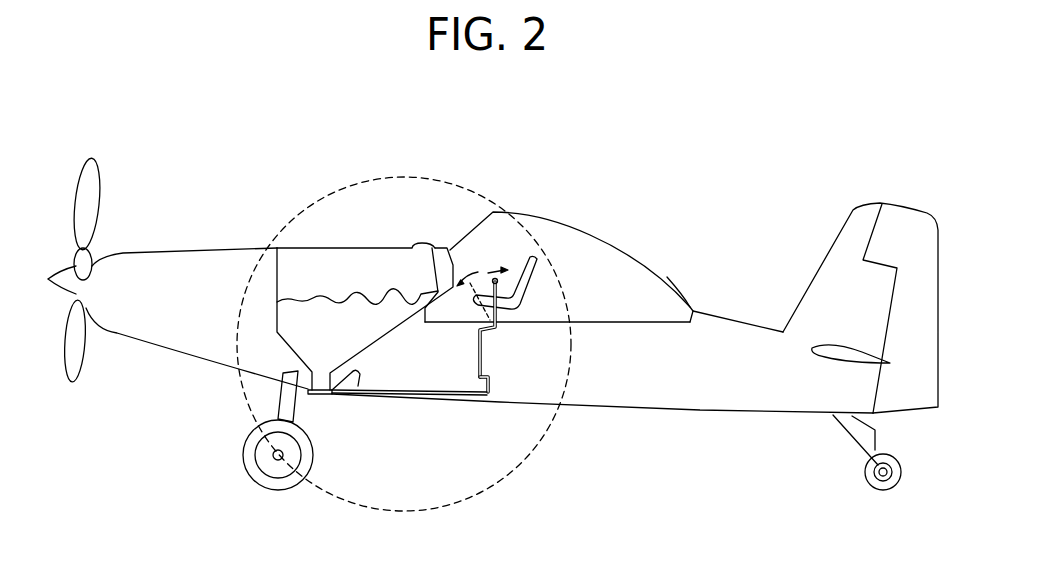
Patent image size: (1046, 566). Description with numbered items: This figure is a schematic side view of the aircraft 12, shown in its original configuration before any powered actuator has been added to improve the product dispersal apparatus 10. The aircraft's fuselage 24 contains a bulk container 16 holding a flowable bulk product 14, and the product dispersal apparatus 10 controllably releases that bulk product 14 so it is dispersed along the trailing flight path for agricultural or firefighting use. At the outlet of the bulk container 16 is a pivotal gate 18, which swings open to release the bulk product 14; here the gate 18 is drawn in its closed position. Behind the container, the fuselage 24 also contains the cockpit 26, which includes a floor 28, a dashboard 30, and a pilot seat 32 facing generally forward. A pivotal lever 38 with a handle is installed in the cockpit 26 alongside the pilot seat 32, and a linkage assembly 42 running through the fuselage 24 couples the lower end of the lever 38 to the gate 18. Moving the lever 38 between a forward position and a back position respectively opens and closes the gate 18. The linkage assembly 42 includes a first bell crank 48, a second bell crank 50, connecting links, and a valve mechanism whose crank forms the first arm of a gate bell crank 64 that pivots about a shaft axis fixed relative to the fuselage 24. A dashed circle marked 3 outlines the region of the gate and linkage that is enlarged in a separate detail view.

The detail region of FIG. 3 is at (320, 200).
The product dispersal apparatus 10 is at (703, 196).
The aircraft 12 is at (561, 211).
The flowable bulk product 14 is at (367, 294).
The bulk container 16 is at (276, 288).
The pivotal gate 18 is at (321, 394).
The fuselage 24 is at (683, 411).
The cockpit 26 is at (597, 266).
The floor 28 is at (649, 321).
The dashboard 30 is at (448, 252).
The pilot seat 32 is at (523, 291).
The pivotal lever 38 is at (510, 295).
The linkage assembly 42 is at (477, 360).
The first bell crank 48 is at (487, 332).
The second bell crank 50 is at (491, 382).
The gate bell crank 64 is at (360, 373).